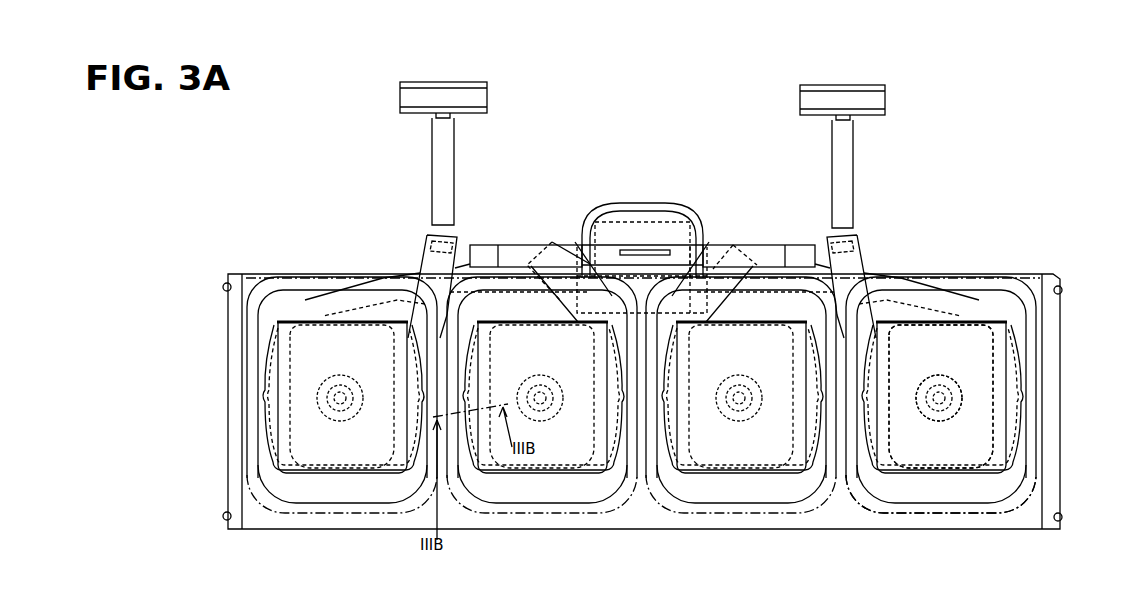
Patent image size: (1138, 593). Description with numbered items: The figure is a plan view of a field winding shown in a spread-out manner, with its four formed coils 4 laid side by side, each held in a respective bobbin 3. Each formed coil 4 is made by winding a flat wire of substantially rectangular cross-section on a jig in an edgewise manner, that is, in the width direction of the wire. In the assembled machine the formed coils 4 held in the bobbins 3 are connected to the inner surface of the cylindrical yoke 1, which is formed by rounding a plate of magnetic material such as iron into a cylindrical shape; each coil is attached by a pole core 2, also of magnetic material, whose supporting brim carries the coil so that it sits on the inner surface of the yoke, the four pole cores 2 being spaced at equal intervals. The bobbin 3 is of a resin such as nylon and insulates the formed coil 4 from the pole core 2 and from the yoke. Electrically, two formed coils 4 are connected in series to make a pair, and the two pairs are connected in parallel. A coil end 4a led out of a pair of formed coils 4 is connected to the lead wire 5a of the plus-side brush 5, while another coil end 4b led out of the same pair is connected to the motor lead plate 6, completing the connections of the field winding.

The cylindrical yoke 1 is at (852, 528).
The pole core 2 is at (996, 356).
The bobbin 3 is at (999, 518).
The formed coil 4 is at (974, 300).
The coil end 4a is at (857, 250).
The coil end 4b is at (737, 252).
The plus-side brush 5 is at (852, 98).
The lead wire 5a is at (852, 163).
The motor lead plate 6 is at (765, 246).